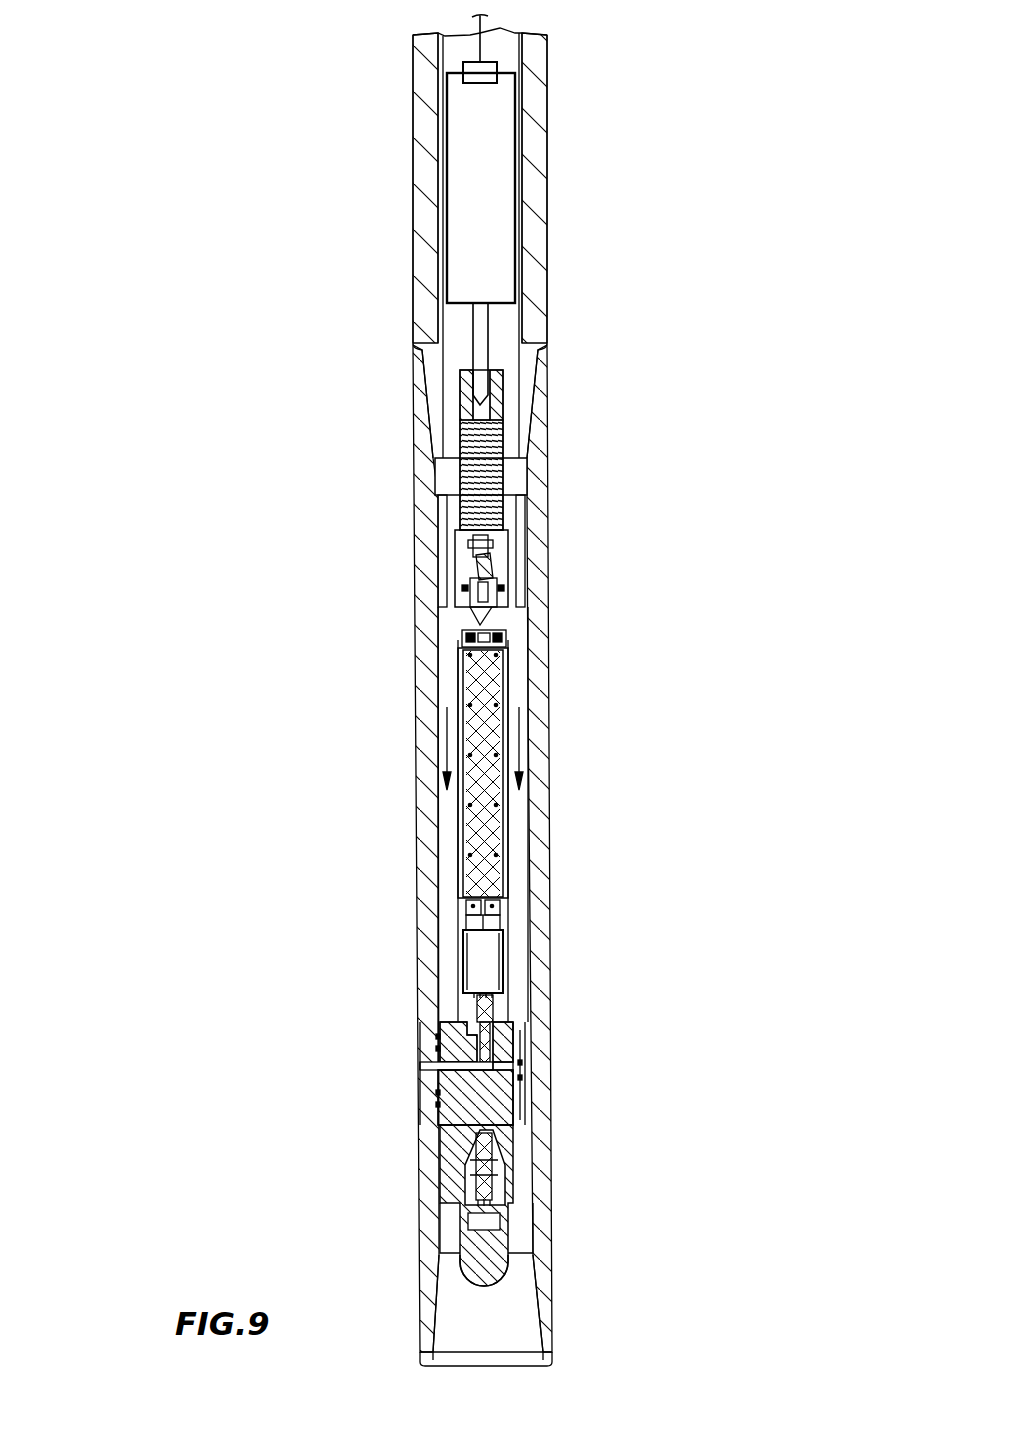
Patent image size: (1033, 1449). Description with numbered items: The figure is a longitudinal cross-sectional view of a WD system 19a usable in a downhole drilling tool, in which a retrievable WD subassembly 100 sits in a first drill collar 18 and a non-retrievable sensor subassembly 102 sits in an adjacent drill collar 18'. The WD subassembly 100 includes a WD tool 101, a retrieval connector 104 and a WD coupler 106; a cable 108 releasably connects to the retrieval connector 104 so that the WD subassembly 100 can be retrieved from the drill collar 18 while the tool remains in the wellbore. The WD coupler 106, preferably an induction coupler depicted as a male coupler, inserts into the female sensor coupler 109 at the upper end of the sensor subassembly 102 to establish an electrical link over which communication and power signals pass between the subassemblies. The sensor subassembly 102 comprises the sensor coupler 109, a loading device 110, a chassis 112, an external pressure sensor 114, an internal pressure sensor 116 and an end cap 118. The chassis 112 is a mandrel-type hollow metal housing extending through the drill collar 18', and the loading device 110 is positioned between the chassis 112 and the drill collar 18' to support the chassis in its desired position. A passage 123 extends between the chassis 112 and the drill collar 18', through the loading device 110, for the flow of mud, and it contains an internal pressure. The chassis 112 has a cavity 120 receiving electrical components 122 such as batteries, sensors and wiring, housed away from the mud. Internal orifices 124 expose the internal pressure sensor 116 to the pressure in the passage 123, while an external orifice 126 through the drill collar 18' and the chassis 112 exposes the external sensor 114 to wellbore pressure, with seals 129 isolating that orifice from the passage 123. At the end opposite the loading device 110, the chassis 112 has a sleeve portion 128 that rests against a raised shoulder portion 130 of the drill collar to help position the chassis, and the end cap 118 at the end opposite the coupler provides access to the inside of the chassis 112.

The WD system 19a is at (150, 146).
The WD subassembly 100 is at (362, 393).
The sensor subassembly 102 is at (703, 1342).
The first drill collar 18 is at (526, 243).
The adjacent drill collar 18' is at (535, 854).
The WD tool 101 is at (495, 98).
The retrieval connector 104 is at (500, 63).
The WD coupler 106 is at (483, 325).
The cable 108 is at (482, 24).
The sensor coupler 109 is at (497, 430).
The loading device 110 is at (523, 572).
The chassis 112 is at (452, 790).
The external pressure sensor 114 is at (476, 1008).
The internal pressure sensor 116 is at (495, 1178).
The end cap 118 is at (505, 1272).
The cavity 120 is at (500, 965).
The electrical components 122 is at (495, 822).
The passage 123 is at (440, 660).
The internal orifices 124 is at (462, 1165).
The external orifice 126 is at (425, 1068).
The sleeve portion 128 is at (520, 1078).
The seals 129 is at (440, 1040).
The raised shoulder portion 130 is at (510, 1190).